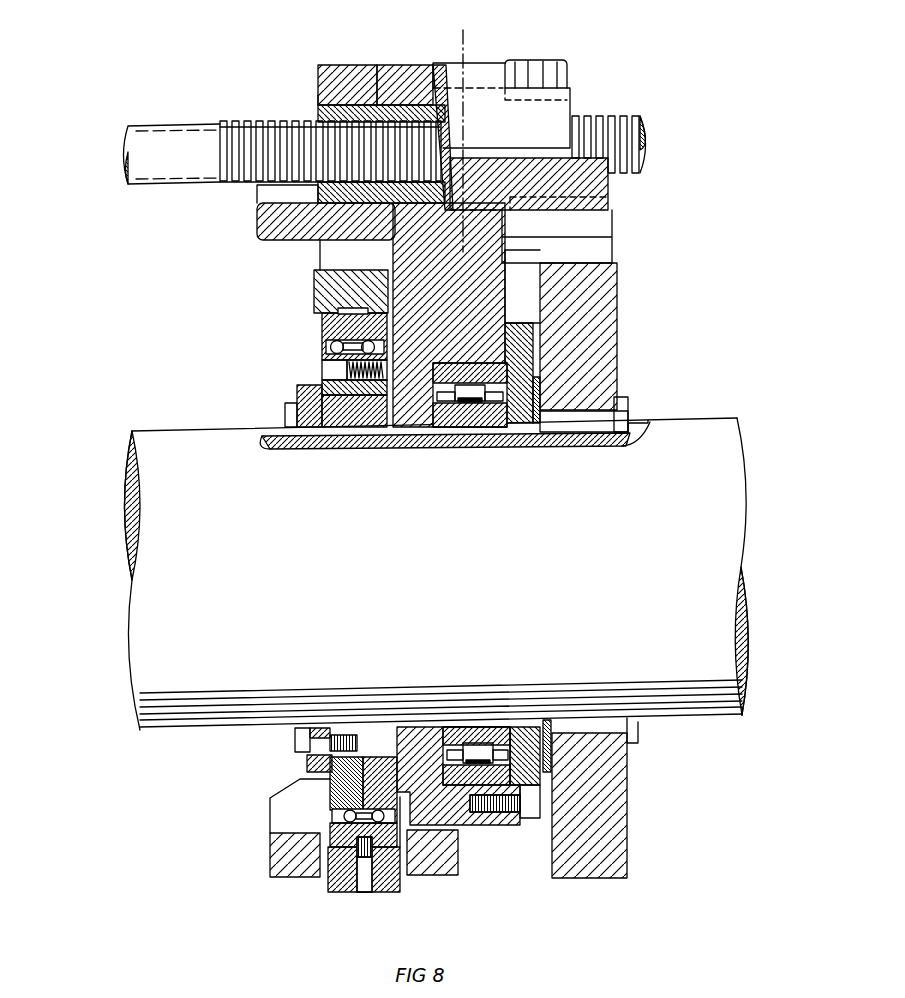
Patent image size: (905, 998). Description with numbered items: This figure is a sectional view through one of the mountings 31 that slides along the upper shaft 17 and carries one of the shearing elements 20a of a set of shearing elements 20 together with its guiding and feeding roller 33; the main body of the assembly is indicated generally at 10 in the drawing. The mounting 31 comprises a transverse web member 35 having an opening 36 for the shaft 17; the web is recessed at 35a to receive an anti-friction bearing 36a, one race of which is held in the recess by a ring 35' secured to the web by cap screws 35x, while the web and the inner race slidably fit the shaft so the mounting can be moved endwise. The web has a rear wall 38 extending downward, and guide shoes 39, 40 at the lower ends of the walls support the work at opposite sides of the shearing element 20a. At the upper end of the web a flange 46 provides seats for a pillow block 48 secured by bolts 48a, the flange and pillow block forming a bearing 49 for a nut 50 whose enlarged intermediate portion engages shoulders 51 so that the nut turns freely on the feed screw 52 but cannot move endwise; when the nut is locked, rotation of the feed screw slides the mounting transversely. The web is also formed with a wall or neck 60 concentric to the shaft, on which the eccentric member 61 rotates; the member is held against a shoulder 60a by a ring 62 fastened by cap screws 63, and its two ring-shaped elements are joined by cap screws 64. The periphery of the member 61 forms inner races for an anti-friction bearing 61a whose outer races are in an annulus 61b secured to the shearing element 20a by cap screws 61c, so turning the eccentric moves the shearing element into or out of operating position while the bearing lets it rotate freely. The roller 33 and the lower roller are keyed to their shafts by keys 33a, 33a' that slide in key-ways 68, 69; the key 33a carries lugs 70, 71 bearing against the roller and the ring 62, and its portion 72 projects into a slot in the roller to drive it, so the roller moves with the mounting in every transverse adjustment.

The main body 10 is at (466, 258).
The shaft 17 is at (140, 658).
The set of shearing elements 20 is at (327, 291).
The shearing element 20a is at (349, 877).
The mounting 31 is at (596, 320).
The guiding and feeding roller 33 is at (607, 803).
The key 33a is at (662, 738).
The key 33a' is at (467, 455).
The web member 35 is at (519, 332).
The ring 35' is at (509, 711).
The recess 35a is at (456, 363).
The cap screws 35x is at (536, 805).
The opening 36 is at (372, 725).
The anti-friction bearing 36a is at (473, 398).
The rear wall 38 is at (340, 249).
The guide shoe 39 is at (300, 863).
The guide shoe 40 is at (443, 863).
The flange 46 is at (600, 215).
The pillow block 48 is at (338, 73).
The bolts 48a is at (523, 73).
The bearing 49 is at (318, 98).
The nut 50 is at (408, 64).
The shoulders 51 is at (377, 88).
The feed screw 52 is at (633, 121).
The wall or neck 60 is at (347, 395).
The shoulder 60a is at (397, 384).
The eccentric member 61 is at (322, 347).
The anti-friction bearing 61a is at (340, 812).
The annulus 61b is at (333, 832).
The cap screws 61c is at (364, 885).
The ring 62 is at (297, 393).
The cap screws 63 is at (297, 753).
The cap screws 64 is at (333, 368).
The key-way 68 is at (742, 716).
The key-way 69 is at (640, 423).
The lug 70 is at (623, 400).
The lug 71 is at (290, 424).
The key portion 72 is at (597, 423).